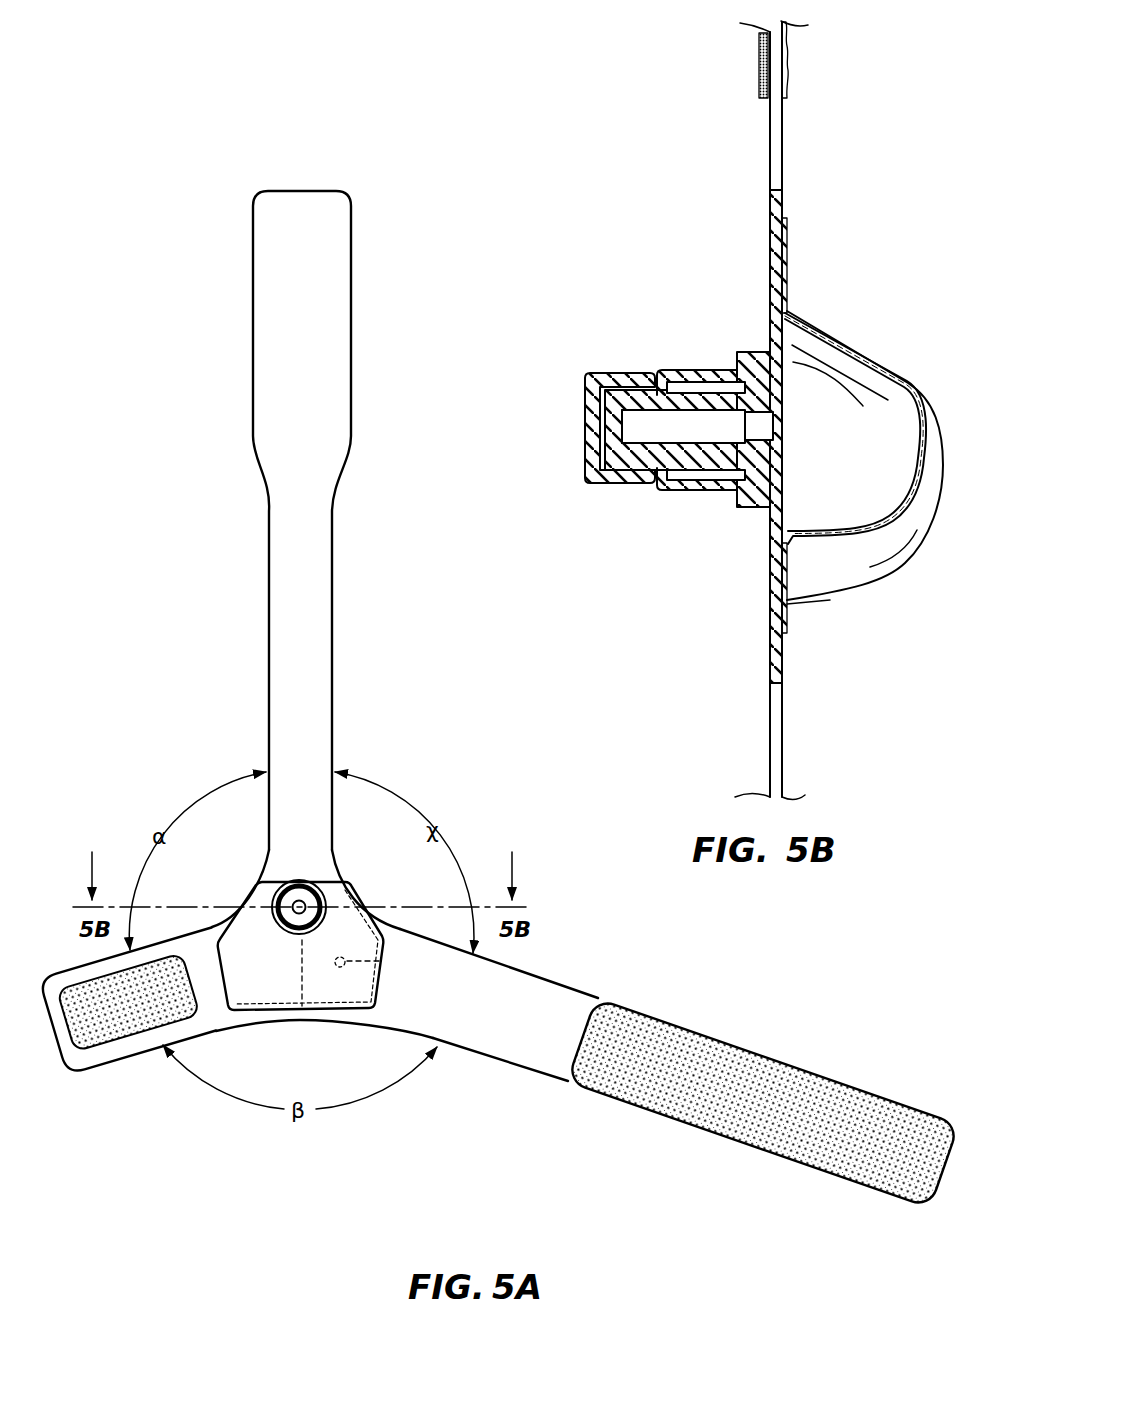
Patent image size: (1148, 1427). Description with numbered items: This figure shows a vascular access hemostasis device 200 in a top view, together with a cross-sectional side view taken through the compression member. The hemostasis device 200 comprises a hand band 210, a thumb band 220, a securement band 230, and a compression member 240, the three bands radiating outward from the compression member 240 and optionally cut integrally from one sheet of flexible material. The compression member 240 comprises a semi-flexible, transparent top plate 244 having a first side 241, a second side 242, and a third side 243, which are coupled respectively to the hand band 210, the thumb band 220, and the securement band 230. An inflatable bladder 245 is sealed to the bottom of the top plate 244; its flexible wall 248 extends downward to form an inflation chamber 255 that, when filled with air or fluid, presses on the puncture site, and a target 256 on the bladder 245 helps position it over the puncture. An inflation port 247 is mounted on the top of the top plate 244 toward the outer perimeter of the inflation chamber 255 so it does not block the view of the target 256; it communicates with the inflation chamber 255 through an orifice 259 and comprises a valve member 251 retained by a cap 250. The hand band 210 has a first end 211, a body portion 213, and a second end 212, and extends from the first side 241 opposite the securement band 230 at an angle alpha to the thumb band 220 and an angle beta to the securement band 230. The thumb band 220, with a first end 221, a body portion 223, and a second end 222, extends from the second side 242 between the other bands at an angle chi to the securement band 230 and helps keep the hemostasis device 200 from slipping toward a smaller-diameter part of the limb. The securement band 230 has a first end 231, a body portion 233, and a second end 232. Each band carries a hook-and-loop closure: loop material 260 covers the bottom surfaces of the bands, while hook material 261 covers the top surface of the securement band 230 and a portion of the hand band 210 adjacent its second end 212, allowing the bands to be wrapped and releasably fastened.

In FIG. 5A, the hemostasis device 200 is at (172, 348).
In FIG. 5A, the hand band 210 is at (582, 1106).
In FIG. 5B, the hand band 210 is at (781, 205).
In FIG. 5A, the first end 211 is at (373, 1034).
In FIG. 5A, the second end 212 is at (888, 1198).
In FIG. 5A, the body portion 213 is at (640, 1010).
In FIG. 5A, the thumb band 220 is at (262, 548).
In FIG. 5A, the first end 221 is at (247, 850).
In FIG. 5A, the second end 222 is at (257, 236).
In FIG. 5A, the body portion 223 is at (335, 574).
In FIG. 5A, the securement band 230 is at (152, 1066).
In FIG. 5A, the first end 231 is at (210, 1032).
In FIG. 5A, the second end 232 is at (55, 1070).
In FIG. 5A, the body portion 233 is at (93, 953).
In FIG. 5A, the compression member 240 is at (392, 883).
In FIG. 5B, the compression member 240 is at (727, 318).
In FIG. 5A, the first side 241 is at (380, 988).
In FIG. 5A, the second side 242 is at (321, 889).
In FIG. 5A, the third side 243 is at (217, 957).
In FIG. 5B, the top plate 244 is at (780, 287).
In FIG. 5B, the inflatable bladder 245 is at (827, 333).
In FIG. 5A, the inflation port 247 is at (326, 896).
In FIG. 5B, the inflation port 247 is at (672, 373).
In FIG. 5B, the flexible wall 248 is at (827, 574).
In FIG. 5B, the cap 250 is at (586, 389).
In FIG. 5B, the valve member 251 is at (646, 374).
In FIG. 5B, the inflation chamber 255 is at (865, 407).
In FIG. 5A, the target 256 is at (383, 962).
In FIG. 5B, the orifice 259 is at (740, 497).
In FIG. 5A, the loop material 260 is at (749, 1112).
In FIG. 5B, the loop material 260 is at (790, 65).
In FIG. 5A, the hook material 261 is at (83, 1037).
In FIG. 5B, the hook material 261 is at (763, 72).